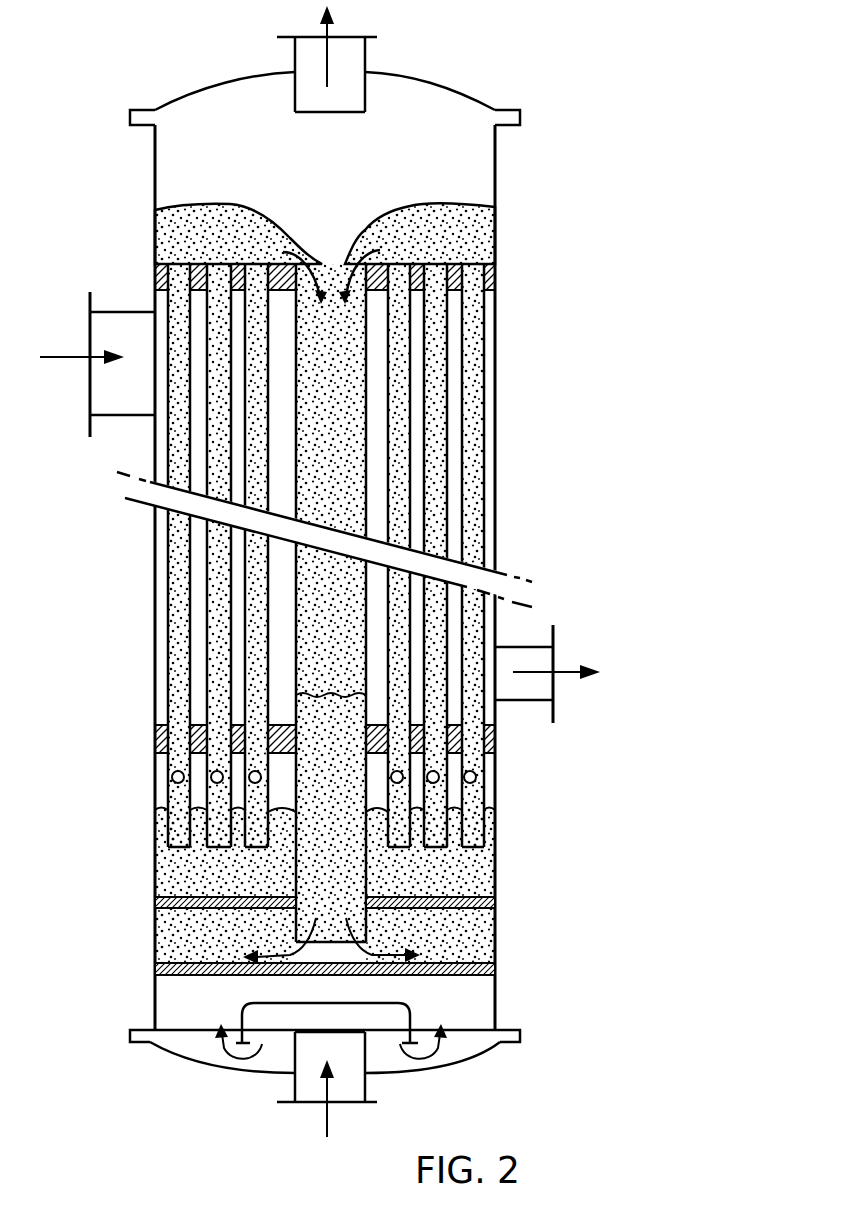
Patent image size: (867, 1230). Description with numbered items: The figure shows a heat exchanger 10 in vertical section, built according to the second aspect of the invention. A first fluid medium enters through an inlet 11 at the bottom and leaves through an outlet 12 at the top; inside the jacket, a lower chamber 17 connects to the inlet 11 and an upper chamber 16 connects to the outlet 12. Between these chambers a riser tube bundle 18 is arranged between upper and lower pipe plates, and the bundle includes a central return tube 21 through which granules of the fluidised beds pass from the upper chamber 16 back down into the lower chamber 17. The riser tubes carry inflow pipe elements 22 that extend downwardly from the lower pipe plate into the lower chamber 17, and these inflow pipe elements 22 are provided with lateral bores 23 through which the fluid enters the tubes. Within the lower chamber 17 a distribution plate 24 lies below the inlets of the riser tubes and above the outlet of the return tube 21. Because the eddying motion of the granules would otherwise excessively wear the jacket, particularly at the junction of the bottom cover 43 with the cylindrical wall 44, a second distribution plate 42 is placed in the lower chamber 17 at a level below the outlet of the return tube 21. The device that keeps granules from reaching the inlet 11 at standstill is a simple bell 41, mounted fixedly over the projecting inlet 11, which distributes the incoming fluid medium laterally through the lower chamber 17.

The heat exchanger 10 is at (138, 562).
The inlet 11 is at (343, 1090).
The outlet 12 is at (349, 61).
The upper chamber 16 is at (465, 178).
The lower chamber 17 is at (470, 928).
The riser tube bundle 18 is at (430, 413).
The return tube 21 is at (353, 490).
The inflow pipe elements 22 is at (433, 831).
The lateral bores 23 is at (440, 778).
The distribution plate 24 is at (495, 902).
The bell 41 is at (410, 1013).
The second distribution plate 42 is at (495, 968).
The bottom cover 43 is at (455, 1054).
The cylindrical wall 44 is at (495, 1013).